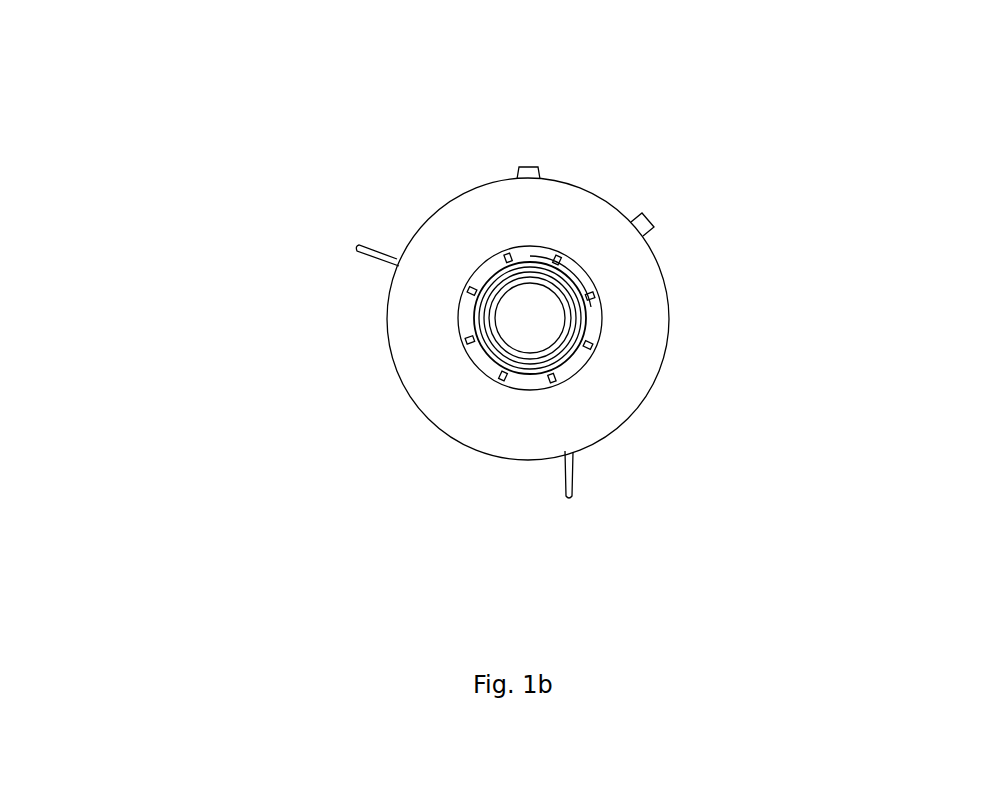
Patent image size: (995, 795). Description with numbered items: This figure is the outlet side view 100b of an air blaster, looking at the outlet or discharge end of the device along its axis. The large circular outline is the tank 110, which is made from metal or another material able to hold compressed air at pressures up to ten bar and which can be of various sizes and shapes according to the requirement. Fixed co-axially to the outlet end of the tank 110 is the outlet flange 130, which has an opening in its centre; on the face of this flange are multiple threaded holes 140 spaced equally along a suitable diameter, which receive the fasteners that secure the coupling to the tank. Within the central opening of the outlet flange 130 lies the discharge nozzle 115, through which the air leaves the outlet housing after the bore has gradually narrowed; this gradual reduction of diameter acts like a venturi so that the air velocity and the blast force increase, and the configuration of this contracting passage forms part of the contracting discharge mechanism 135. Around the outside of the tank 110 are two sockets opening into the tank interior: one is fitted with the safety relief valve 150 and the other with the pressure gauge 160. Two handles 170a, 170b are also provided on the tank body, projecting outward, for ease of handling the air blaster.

The outlet side view 100b is at (124, 74).
The tank 110 is at (644, 416).
The discharge nozzle 115 is at (520, 348).
The outlet flange 130 is at (604, 334).
The contracting discharge mechanism 135 is at (507, 314).
The threaded holes 140 is at (450, 331).
The safety relief valve 150 is at (654, 211).
The pressure gauge 160 is at (528, 155).
The handle 170a is at (584, 485).
The handle 170b is at (358, 229).